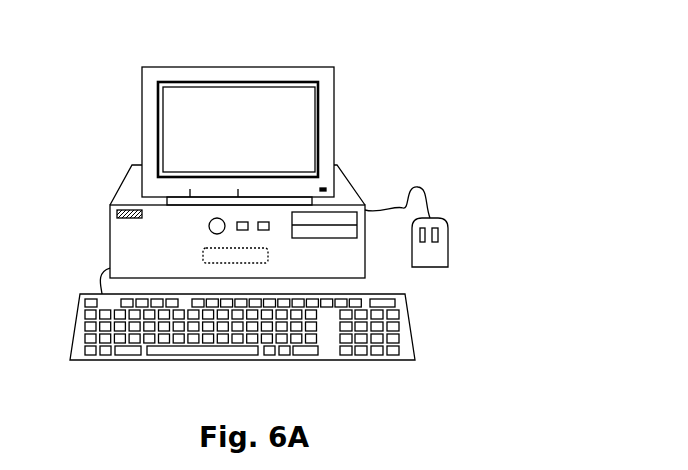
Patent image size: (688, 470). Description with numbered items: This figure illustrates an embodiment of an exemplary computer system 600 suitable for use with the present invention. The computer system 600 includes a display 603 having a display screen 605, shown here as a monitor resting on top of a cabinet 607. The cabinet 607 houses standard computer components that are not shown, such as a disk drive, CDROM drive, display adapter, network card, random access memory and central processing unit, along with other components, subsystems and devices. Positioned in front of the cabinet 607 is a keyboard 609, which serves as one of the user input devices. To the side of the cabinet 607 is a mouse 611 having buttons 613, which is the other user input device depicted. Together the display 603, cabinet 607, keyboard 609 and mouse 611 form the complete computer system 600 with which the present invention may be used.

The computer system 600 is at (497, 103).
The display 603 is at (335, 115).
The display screen 605 is at (303, 102).
The cabinet 607 is at (348, 168).
The keyboard 609 is at (143, 360).
The mouse 611 is at (438, 255).
The buttons 613 is at (427, 222).